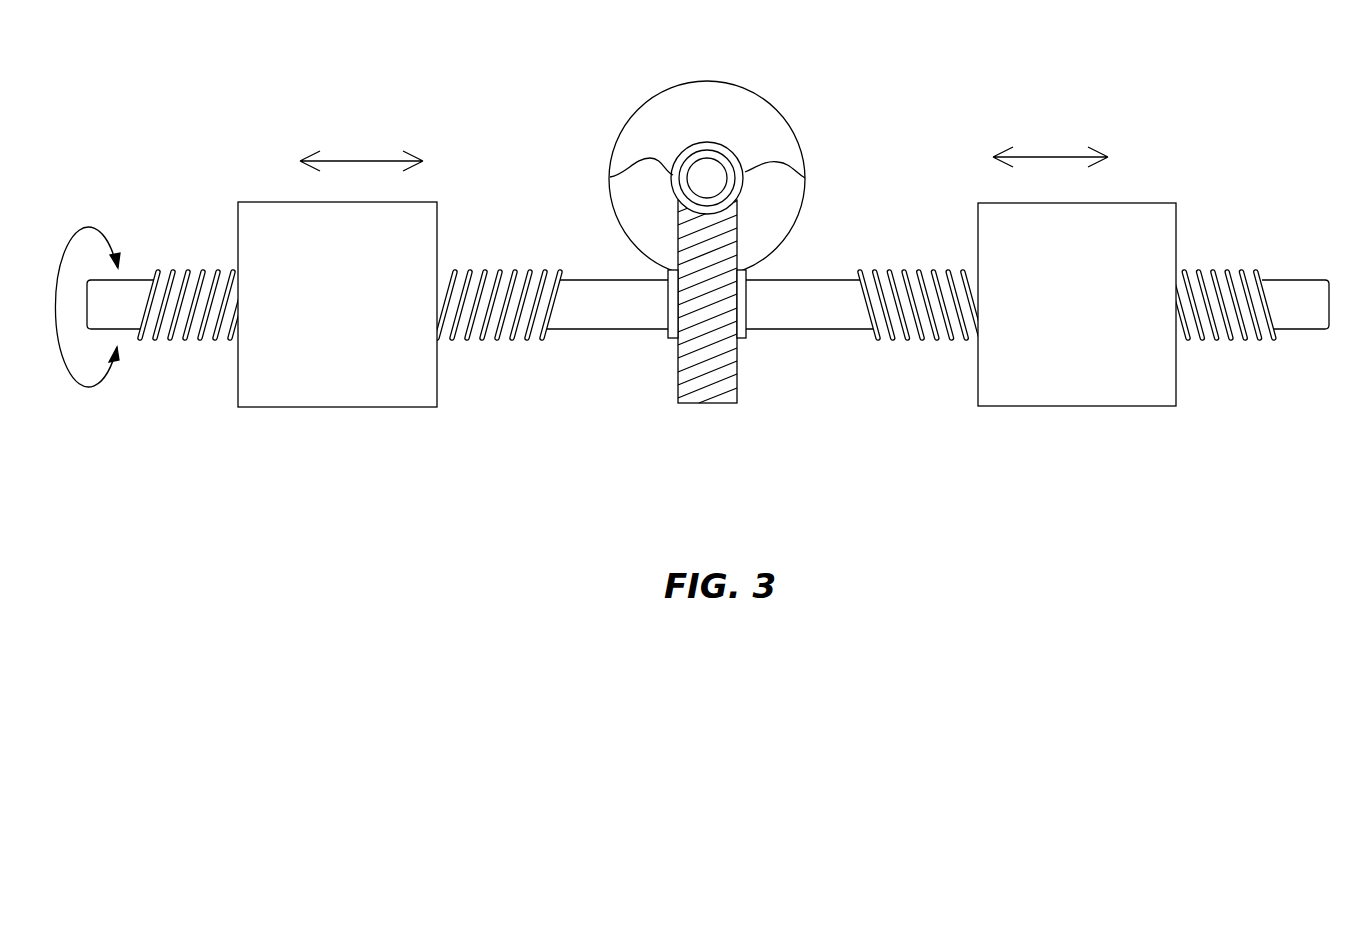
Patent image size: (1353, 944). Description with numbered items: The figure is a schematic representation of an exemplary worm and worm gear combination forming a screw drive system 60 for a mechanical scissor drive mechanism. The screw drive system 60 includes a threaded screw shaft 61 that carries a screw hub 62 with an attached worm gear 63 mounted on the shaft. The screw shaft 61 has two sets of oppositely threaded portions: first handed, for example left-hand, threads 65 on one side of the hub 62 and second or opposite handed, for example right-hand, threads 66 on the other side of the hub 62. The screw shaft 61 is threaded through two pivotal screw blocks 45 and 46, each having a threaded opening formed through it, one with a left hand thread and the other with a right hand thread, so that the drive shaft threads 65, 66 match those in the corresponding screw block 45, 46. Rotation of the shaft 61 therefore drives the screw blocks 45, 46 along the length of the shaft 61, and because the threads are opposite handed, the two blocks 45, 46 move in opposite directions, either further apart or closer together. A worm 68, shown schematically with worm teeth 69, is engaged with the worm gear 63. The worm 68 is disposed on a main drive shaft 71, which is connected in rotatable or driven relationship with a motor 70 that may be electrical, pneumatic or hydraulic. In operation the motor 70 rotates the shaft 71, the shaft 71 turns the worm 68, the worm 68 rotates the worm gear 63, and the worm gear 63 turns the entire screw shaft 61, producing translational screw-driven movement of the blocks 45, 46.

The pivotal screw block 45 is at (428, 202).
The pivotal screw block 46 is at (1155, 203).
The screw drive system 60 is at (972, 68).
The screw shaft 61 is at (812, 318).
The screw hub 62 is at (665, 334).
The worm gear 63 is at (686, 382).
The first handed threads 65 is at (490, 333).
The second handed threads 66 is at (937, 340).
The worm 68 is at (805, 178).
The worm teeth 69 is at (610, 177).
The motor 70 is at (770, 102).
The main drive shaft 71 is at (703, 168).